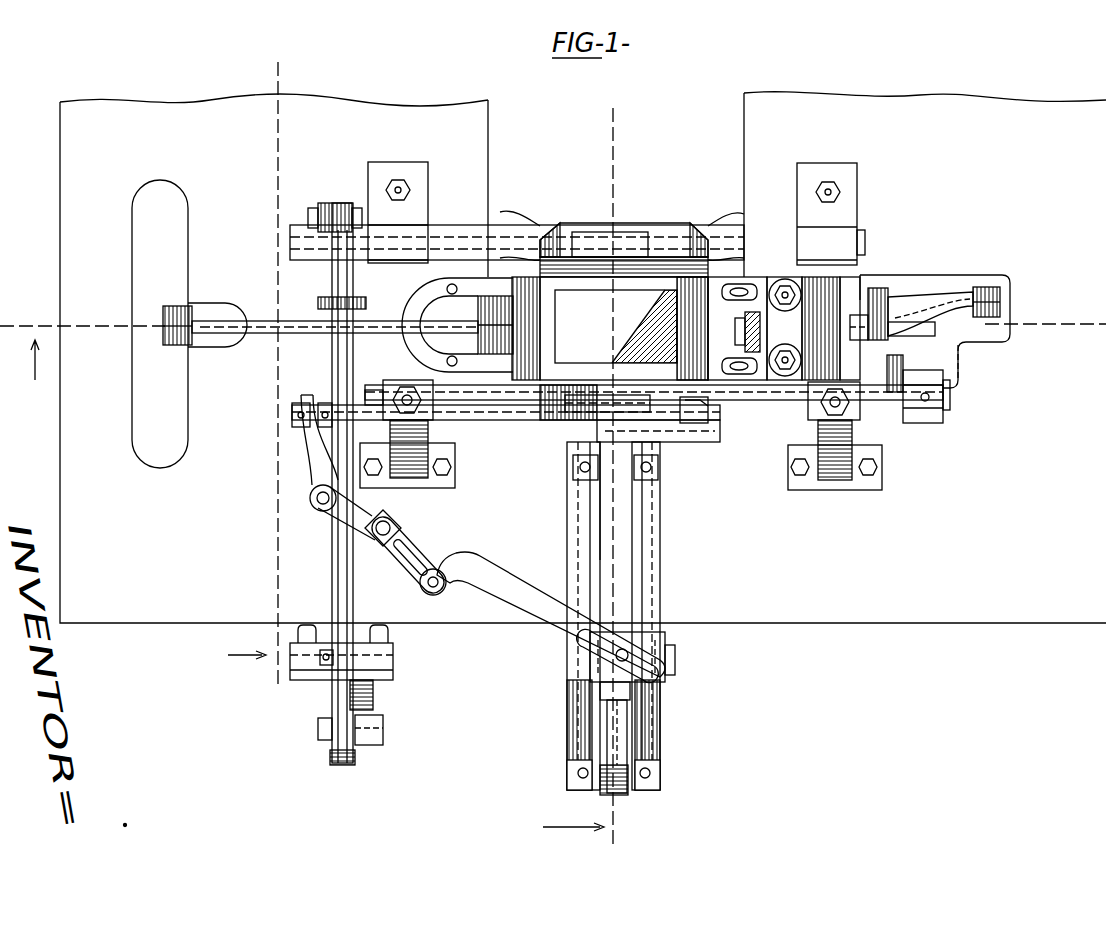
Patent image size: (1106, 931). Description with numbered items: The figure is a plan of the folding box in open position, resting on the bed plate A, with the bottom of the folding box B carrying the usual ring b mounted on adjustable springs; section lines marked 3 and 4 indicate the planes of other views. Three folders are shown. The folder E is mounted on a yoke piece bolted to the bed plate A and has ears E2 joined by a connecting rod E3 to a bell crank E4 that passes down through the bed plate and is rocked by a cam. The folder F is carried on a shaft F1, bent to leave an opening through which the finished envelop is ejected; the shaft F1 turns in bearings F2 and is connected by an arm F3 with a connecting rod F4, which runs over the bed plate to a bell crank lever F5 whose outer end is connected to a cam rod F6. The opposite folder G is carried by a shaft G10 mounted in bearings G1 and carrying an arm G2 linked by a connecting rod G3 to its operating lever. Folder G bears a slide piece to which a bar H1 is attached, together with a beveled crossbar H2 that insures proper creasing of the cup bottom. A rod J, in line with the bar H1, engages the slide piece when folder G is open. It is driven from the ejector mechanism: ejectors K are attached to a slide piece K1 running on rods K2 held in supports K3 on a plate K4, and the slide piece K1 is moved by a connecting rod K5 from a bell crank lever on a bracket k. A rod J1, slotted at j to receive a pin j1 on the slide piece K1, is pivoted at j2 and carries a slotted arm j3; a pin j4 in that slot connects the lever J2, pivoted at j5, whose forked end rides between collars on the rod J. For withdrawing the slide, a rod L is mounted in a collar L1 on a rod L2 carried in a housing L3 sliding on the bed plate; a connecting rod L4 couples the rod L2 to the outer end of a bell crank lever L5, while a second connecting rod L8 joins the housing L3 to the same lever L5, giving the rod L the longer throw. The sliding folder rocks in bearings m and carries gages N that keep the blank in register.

The bed plate A is at (583, 357).
The section line 3 is at (589, 466).
The section line 4 is at (254, 375).
The bottom of the folding box B is at (624, 328).
The ring b is at (638, 283).
The folder E is at (533, 318).
The ears E2 is at (478, 318).
The connecting rod E3 is at (385, 334).
The bell crank E4 is at (178, 346).
The folder F is at (580, 235).
The shaft F1 is at (460, 236).
The bearings F2 is at (420, 230).
The arm F3 is at (340, 203).
The connecting rod F4 is at (334, 360).
The bell crank lever F5 is at (330, 680).
The cam rod F6 is at (373, 690).
The folder G is at (578, 388).
The bearings G1 is at (425, 430).
The arm G2 is at (905, 372).
The connecting rod G3 is at (858, 415).
The shaft G10 is at (500, 403).
The slide bar g is at (662, 385).
The bar H1 is at (720, 440).
The beveled crossbar H2 is at (712, 410).
The rod J is at (514, 418).
The rod J1 is at (528, 603).
The lever J2 is at (315, 478).
The slot j is at (595, 640).
The pin j1 is at (607, 662).
The pivot j2 is at (440, 593).
The slotted arm j3 is at (425, 548).
The pin j4 is at (394, 524).
The pivot j5 is at (317, 507).
The ejectors K is at (662, 512).
The slide piece K1 is at (652, 697).
The rods K2 is at (580, 528).
The supports K3 is at (578, 467).
The plate K4 is at (578, 490).
The connecting rod K5 is at (615, 720).
The bracket k is at (615, 596).
The rod L is at (748, 346).
The collar L1 is at (748, 316).
The rod L2 is at (924, 326).
The housing L3 is at (855, 283).
The connecting rod L4 is at (940, 290).
The bell crank lever L5 is at (1003, 292).
The connecting rod L8 is at (950, 308).
The bearings m is at (736, 322).
The gages N is at (745, 290).